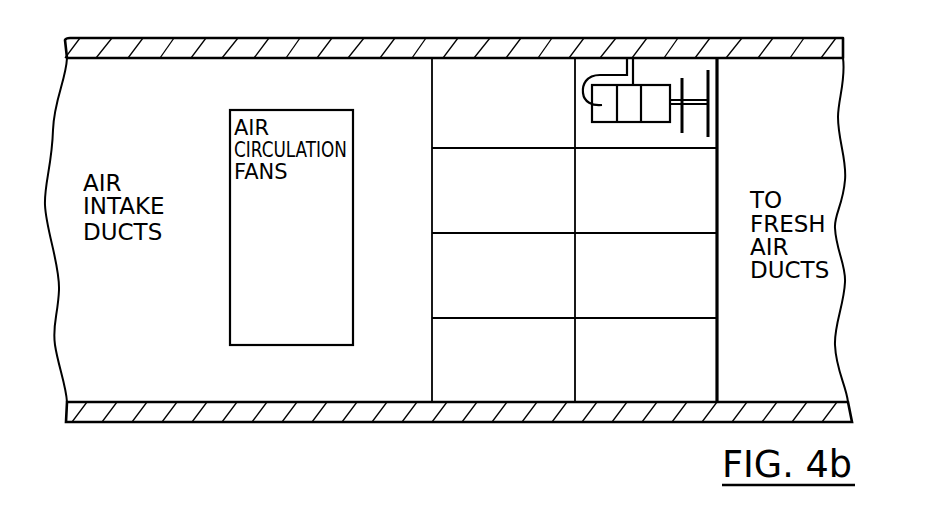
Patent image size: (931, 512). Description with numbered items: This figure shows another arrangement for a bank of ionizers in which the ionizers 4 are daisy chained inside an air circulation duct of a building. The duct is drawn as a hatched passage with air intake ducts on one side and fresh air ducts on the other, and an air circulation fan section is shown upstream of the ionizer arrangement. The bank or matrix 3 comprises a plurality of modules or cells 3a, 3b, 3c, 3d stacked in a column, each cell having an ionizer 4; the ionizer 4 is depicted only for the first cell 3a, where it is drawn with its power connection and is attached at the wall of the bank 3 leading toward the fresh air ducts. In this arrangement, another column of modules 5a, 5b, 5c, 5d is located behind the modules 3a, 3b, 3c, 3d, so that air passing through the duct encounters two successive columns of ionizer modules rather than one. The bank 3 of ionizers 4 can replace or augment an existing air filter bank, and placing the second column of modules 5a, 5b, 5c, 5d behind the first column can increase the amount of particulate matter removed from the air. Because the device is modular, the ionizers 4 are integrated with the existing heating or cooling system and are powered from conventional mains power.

The bank or matrix 3 is at (721, 150).
The cell 3a is at (625, 135).
The cell 3b is at (662, 219).
The cell 3c is at (662, 306).
The cell 3d is at (662, 389).
The ionizer 4 is at (583, 99).
The module 5a is at (503, 138).
The module 5b is at (503, 219).
The module 5c is at (503, 306).
The module 5d is at (503, 389).